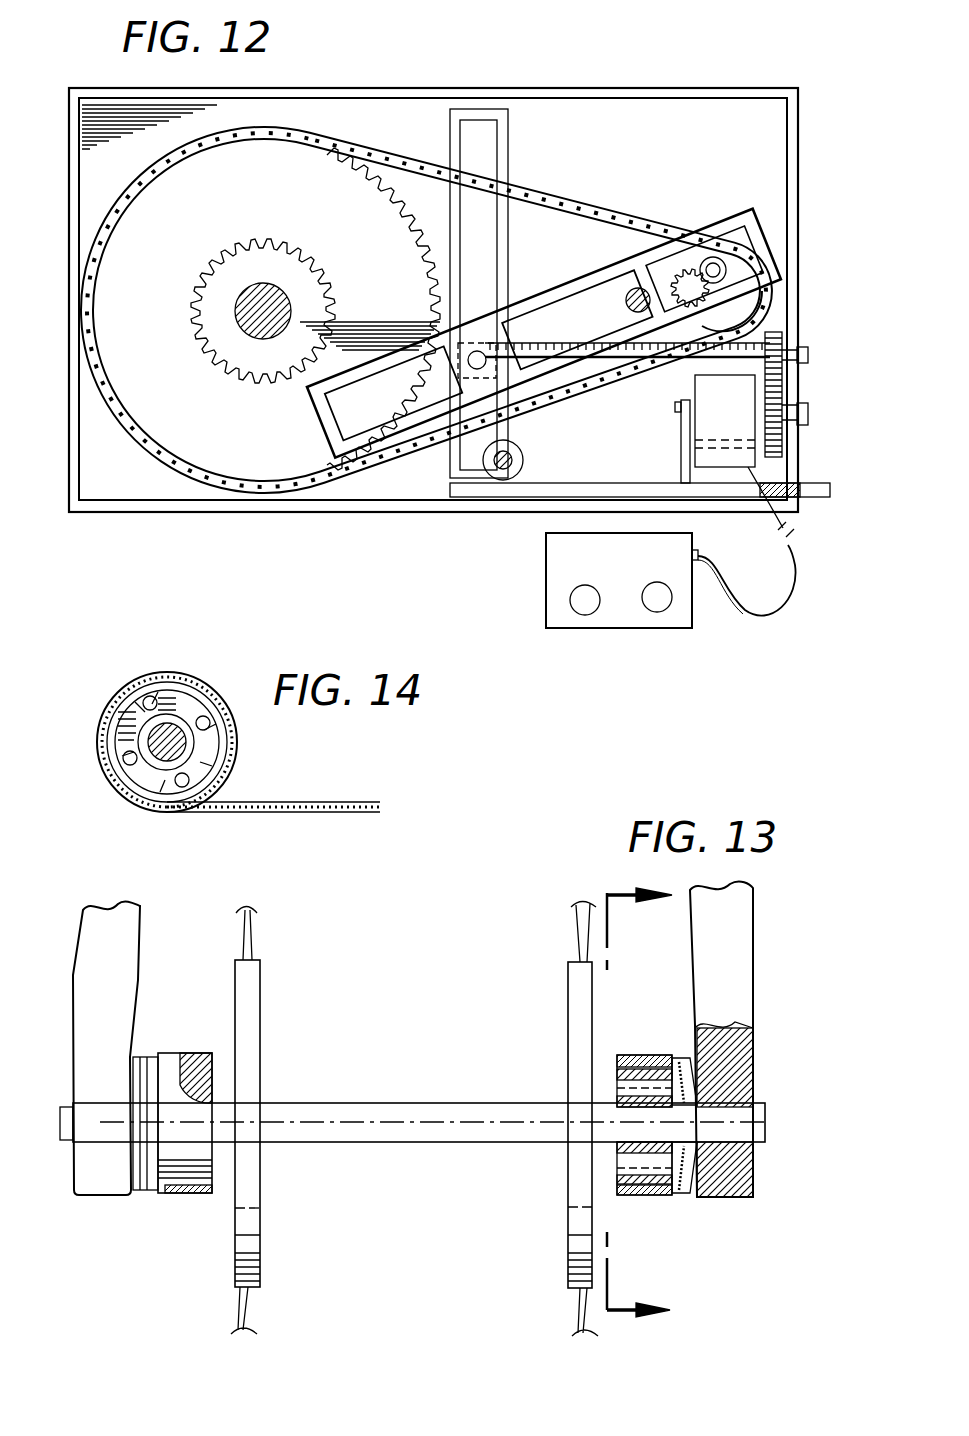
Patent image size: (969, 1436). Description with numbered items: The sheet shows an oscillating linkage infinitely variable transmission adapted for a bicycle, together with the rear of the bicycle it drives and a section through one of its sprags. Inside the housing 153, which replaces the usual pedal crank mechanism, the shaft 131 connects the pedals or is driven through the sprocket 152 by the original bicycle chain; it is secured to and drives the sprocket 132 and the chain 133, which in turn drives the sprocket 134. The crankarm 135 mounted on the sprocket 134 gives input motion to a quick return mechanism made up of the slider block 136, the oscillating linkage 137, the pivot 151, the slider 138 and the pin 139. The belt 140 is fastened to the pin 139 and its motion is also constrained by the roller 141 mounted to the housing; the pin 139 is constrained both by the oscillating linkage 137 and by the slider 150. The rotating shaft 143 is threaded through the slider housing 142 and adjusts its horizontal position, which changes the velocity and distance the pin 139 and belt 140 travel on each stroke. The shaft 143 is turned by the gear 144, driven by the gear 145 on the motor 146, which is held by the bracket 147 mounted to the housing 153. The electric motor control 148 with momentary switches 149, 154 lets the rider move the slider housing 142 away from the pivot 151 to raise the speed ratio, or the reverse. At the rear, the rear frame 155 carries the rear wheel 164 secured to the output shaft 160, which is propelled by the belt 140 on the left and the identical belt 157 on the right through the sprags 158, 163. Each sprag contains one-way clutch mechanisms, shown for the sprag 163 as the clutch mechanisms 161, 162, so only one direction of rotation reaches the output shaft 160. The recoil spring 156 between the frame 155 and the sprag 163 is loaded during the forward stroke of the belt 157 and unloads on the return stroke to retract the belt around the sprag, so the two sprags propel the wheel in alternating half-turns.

In FIG. 12, the shaft 131 is at (282, 288).
In FIG. 12, the sprocket 132 is at (205, 418).
In FIG. 12, the chain 133 is at (376, 142).
In FIG. 12, the sprocket 134 is at (750, 312).
In FIG. 12, the crankarm 135 is at (712, 250).
In FIG. 12, the slider block 136 is at (745, 240).
In FIG. 12, the oscillating linkage 137 is at (540, 297).
In FIG. 12, the slider 138 is at (512, 328).
In FIG. 12, the pin 139 is at (414, 386).
In FIG. 12, the belt 140 is at (560, 498).
In FIG. 13, the belt 140 is at (190, 1197).
In FIG. 12, the roller 141 is at (523, 456).
In FIG. 12, the slider housing 142 is at (508, 152).
In FIG. 12, the rotating shaft 143 is at (683, 366).
In FIG. 12, the gear 144 is at (790, 332).
In FIG. 12, the gear 145 is at (787, 400).
In FIG. 12, the motor 146 is at (745, 438).
In FIG. 12, the bracket 147 is at (679, 445).
In FIG. 12, the electric motor control 148 is at (622, 630).
In FIG. 12, the momentary "up" switch 149 is at (569, 598).
In FIG. 12, the slider 150 is at (430, 290).
In FIG. 12, the pivot 151 is at (638, 287).
In FIG. 12, the sprocket 152 is at (268, 240).
In FIG. 12, the housing 153 is at (632, 88).
In FIG. 12, the momentary switch 154 is at (664, 612).
In FIG. 13, the rear frame 155 is at (728, 958).
In FIG. 13, the recoil spring 156 is at (699, 1066).
In FIG. 14, the belt 157 is at (300, 814).
In FIG. 13, the belt 157 is at (657, 1196).
In FIG. 13, the sprag 158 is at (213, 1058).
In FIG. 14, the output shaft 160 is at (176, 733).
In FIG. 13, the output shaft 160 is at (428, 1103).
In FIG. 14, the clutch mechanism 161 is at (126, 758).
In FIG. 14, the clutch mechanism 162 is at (148, 774).
In FIG. 14, the sprag 163 is at (224, 764).
In FIG. 13, the sprag 163 is at (606, 1052).
In FIG. 13, the rear wheel 164 is at (262, 1247).